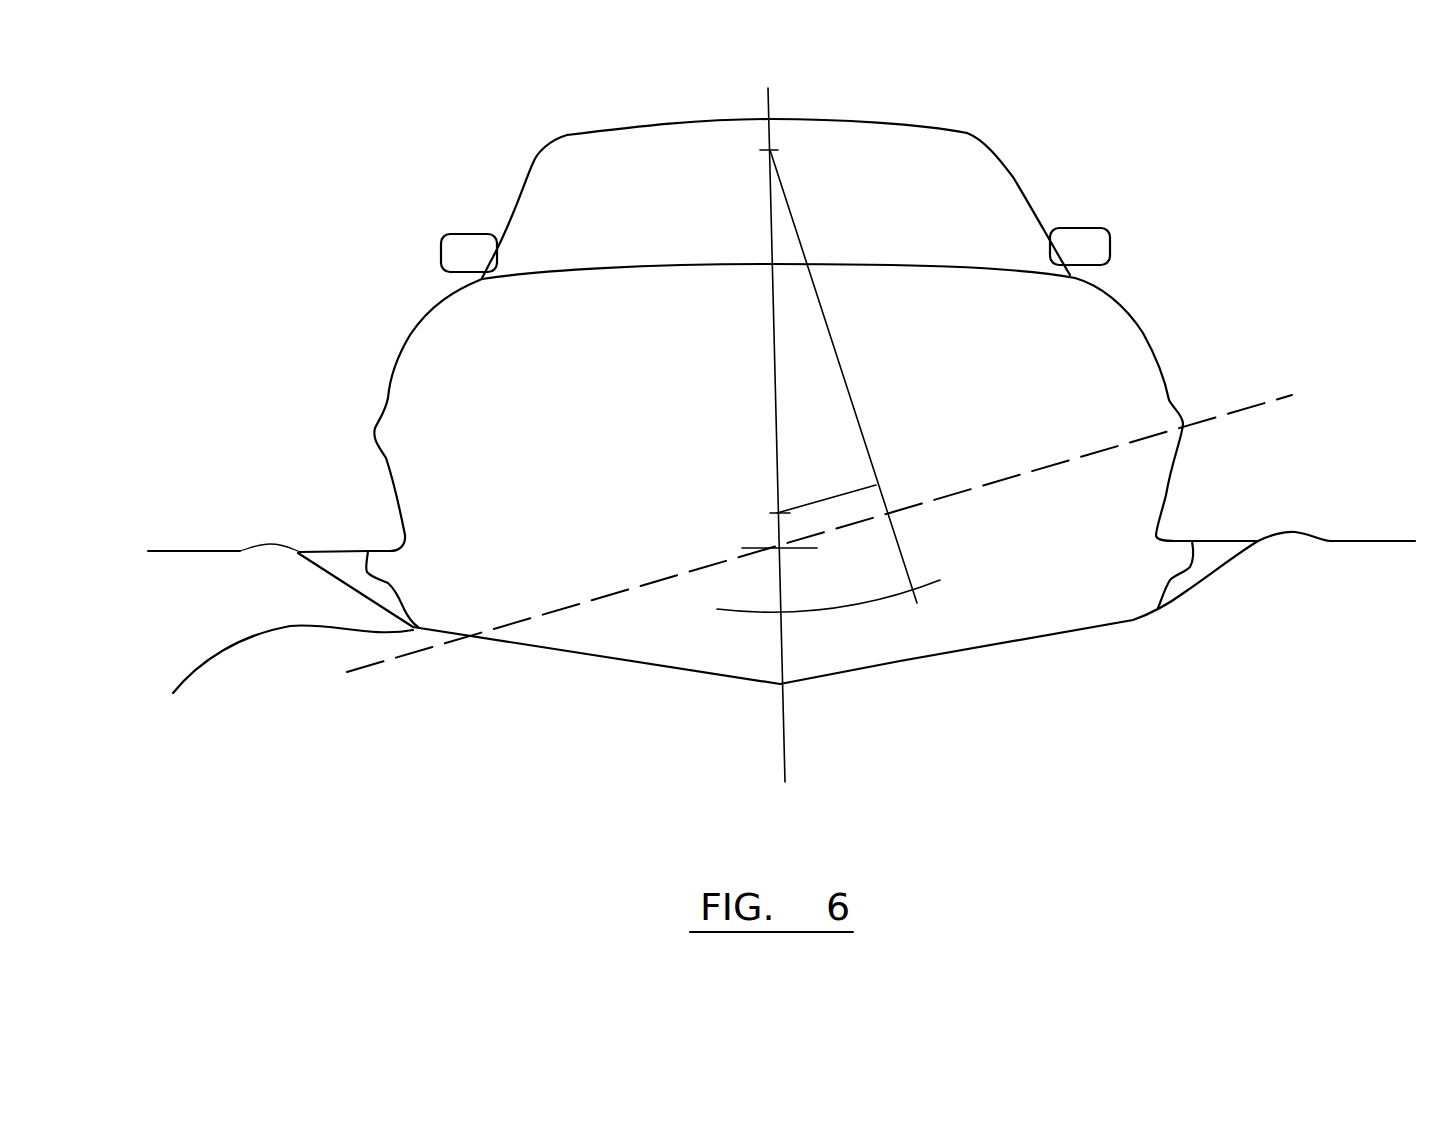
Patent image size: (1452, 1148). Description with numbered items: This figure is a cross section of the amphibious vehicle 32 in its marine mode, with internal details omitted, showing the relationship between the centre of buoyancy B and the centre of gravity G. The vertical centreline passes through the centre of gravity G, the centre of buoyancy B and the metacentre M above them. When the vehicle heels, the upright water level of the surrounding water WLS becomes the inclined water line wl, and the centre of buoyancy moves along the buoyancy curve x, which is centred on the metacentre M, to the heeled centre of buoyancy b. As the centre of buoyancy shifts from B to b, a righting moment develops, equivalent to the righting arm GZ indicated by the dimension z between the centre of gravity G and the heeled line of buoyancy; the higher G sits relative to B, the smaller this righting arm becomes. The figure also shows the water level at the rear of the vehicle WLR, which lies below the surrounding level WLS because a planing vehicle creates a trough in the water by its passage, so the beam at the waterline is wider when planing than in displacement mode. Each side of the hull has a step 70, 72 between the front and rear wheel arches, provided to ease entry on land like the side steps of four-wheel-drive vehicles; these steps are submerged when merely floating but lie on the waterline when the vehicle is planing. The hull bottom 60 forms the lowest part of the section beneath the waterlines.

The vehicle 32 is at (394, 335).
The keel / hull bottom 60 is at (933, 651).
The step 70 is at (372, 552).
The step 72 is at (1192, 541).
The water level in the surrounding water WLS is at (207, 551).
The water level at the rear of the vehicle WLR is at (271, 689).
The water line when heeled wl is at (839, 524).
The metacentre M is at (838, 367).
The centre of gravity G is at (777, 513).
The dimension GZ z is at (840, 489).
The centre of buoyancy B is at (778, 613).
The centre of buoyancy when heeled b is at (915, 590).
The buoyancy curve x is at (830, 610).